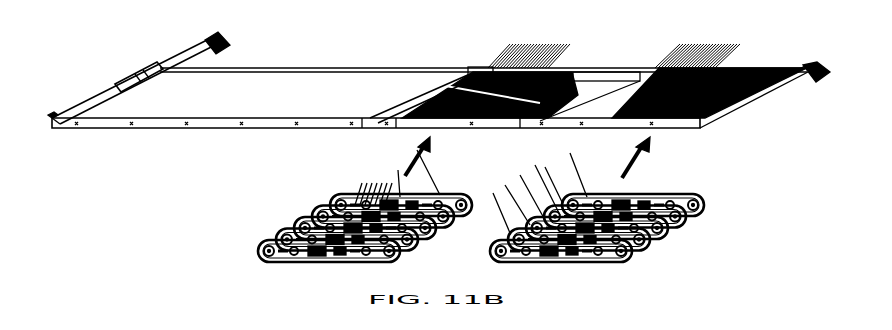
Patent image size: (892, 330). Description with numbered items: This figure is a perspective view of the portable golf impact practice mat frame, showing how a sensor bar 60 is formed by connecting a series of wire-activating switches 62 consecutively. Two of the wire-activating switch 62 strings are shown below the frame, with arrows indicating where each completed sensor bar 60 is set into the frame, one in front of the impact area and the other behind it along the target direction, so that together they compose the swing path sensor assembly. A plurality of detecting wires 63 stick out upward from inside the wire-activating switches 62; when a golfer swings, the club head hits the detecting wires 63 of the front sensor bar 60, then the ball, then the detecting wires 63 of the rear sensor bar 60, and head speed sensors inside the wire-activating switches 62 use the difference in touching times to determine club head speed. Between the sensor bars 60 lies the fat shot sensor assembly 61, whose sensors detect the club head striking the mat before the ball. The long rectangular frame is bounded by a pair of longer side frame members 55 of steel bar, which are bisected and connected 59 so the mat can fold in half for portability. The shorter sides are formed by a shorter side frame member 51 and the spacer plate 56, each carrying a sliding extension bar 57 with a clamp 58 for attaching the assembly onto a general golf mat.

The shorter side frame member 51 is at (115, 88).
The longer side frame member 55 is at (257, 68).
The spacer plate 56 is at (750, 103).
The sliding extension bar 57 is at (180, 54).
The clamp 58 is at (214, 37).
The connection 59 is at (376, 126).
The sensor bar 60 is at (743, 70).
The fat shot sensor assembly 61 is at (590, 73).
The wire-activating switch 62 is at (481, 207).
The detecting wire 63 is at (541, 57).